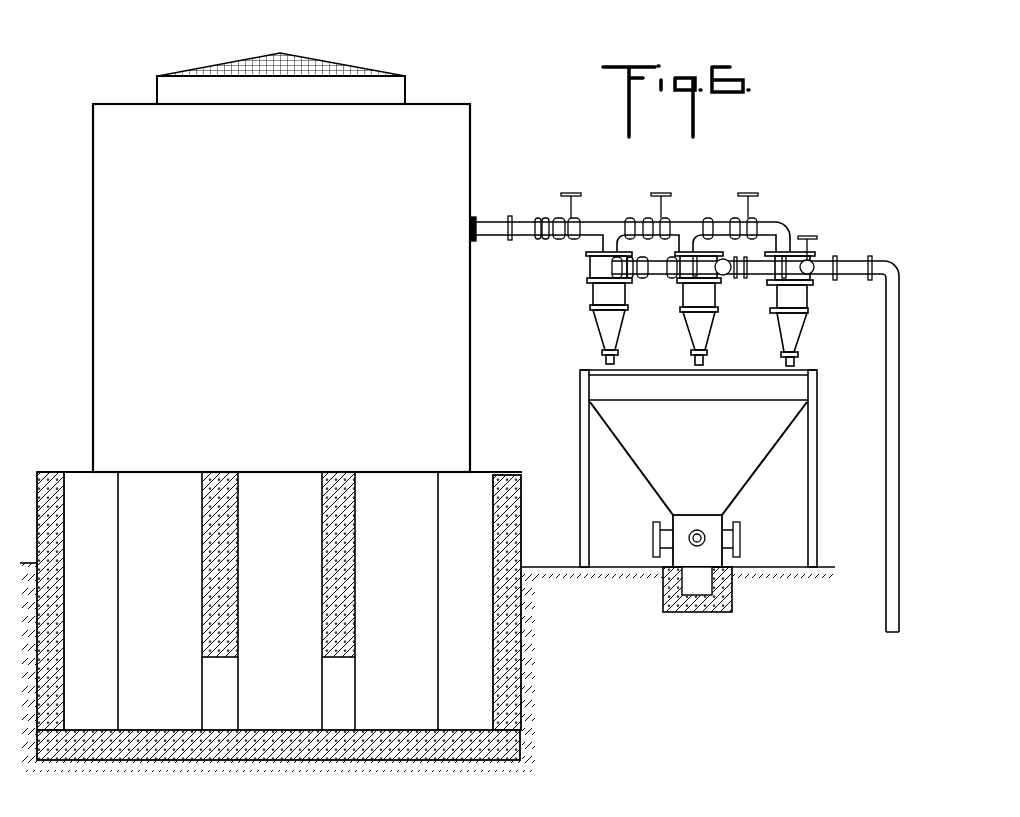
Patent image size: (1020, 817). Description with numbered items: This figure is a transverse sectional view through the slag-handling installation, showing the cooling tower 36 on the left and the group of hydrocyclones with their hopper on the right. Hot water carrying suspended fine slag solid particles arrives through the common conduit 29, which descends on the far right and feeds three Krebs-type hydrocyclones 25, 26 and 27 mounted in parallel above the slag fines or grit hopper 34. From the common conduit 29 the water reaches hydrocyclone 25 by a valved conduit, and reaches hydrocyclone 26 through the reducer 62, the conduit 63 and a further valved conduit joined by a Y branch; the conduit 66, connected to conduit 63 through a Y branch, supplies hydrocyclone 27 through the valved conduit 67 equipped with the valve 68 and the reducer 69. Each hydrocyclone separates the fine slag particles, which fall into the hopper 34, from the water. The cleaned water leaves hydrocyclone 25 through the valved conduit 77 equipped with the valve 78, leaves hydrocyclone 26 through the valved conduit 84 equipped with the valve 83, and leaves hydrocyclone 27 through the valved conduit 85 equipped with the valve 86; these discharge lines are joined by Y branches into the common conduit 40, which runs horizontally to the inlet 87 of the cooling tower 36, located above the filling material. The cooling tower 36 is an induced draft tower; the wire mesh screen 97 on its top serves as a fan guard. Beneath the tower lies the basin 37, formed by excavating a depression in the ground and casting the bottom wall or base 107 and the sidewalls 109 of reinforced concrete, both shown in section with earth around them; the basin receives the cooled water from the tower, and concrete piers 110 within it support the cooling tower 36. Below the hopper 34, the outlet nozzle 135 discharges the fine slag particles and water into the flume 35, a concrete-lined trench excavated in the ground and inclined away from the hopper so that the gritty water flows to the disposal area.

The cooling tower 36 is at (126, 261).
The wire mesh screen 97 is at (322, 66).
The common conduit 40 is at (495, 222).
The inlet 87 is at (476, 240).
The valved conduit 85 is at (546, 240).
The valve 86 is at (563, 240).
The valved conduit 84 is at (642, 218).
The valve 83 is at (662, 222).
The valved conduit 77 is at (722, 225).
The valve 78 is at (749, 230).
The hydrocyclone 27 is at (597, 292).
The hydrocyclone 26 is at (698, 303).
The hydrocyclone 25 is at (798, 300).
The valve 68 is at (663, 276).
The valved conduit 67 is at (684, 276).
The reducer 69 is at (723, 278).
The conduit 66 is at (737, 278).
The conduit 63 is at (784, 280).
The reducer 62 is at (812, 272).
The common conduit 29 is at (887, 380).
The hopper 34 is at (765, 435).
The outlet nozzle 135 is at (697, 528).
The flume 35 is at (740, 594).
The basin 37 is at (519, 469).
The sidewalls 109 is at (52, 472).
The piers 110 is at (205, 610).
The bottom wall or base 107 is at (360, 750).